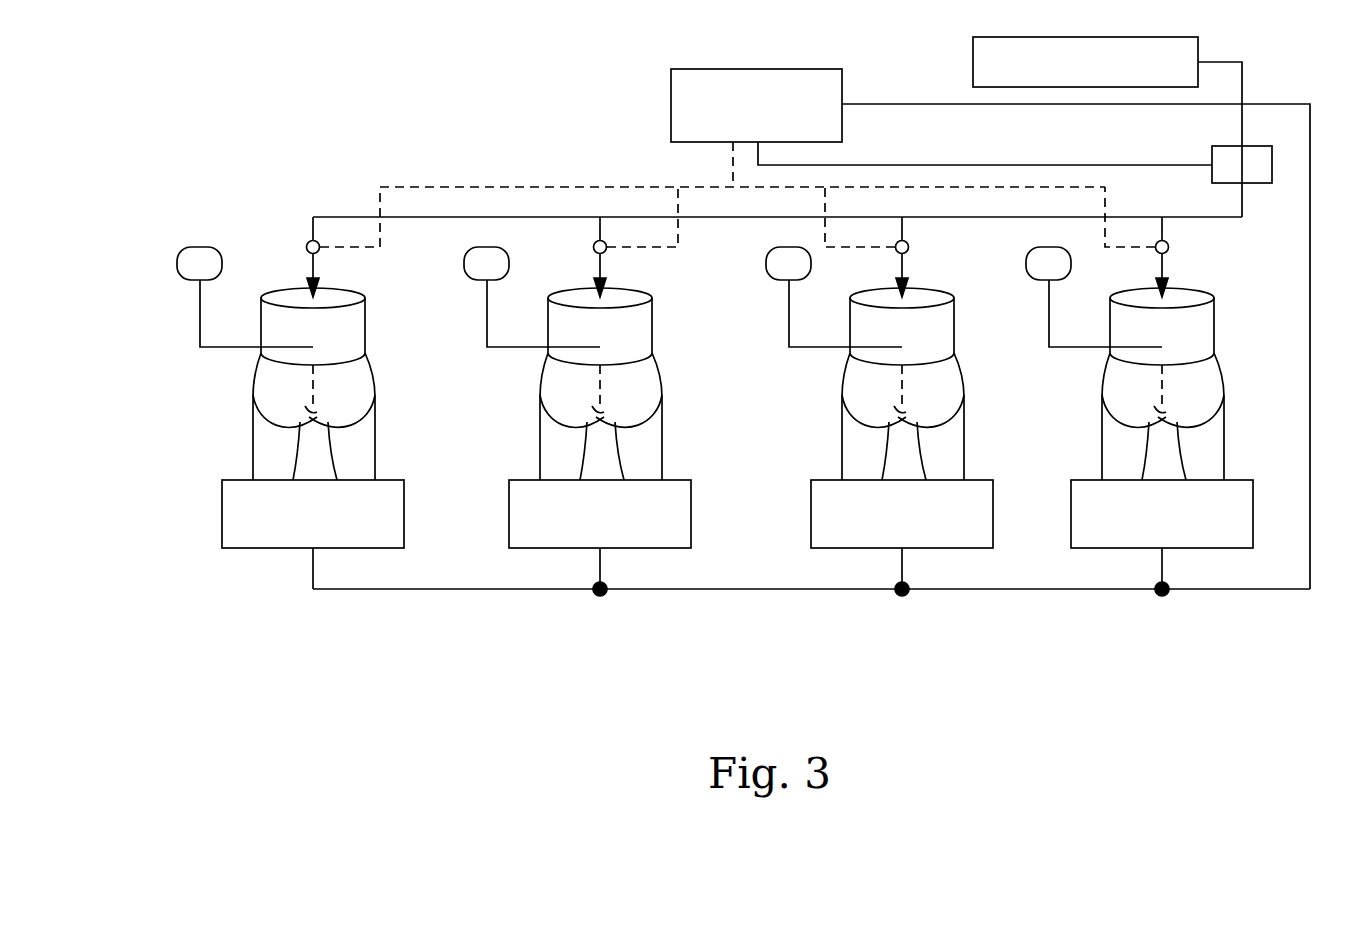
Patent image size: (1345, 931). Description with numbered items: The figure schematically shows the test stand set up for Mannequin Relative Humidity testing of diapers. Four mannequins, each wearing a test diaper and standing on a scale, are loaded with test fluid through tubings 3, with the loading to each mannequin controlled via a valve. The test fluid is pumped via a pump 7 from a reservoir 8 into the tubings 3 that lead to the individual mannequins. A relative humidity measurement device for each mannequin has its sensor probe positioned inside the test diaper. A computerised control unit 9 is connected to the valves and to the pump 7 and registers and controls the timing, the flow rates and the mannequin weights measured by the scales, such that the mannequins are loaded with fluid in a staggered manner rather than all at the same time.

The tubing 3 is at (1244, 192).
The pump 7 is at (1212, 158).
The reservoir 8 is at (973, 50).
The computerised control unit 9 is at (685, 94).